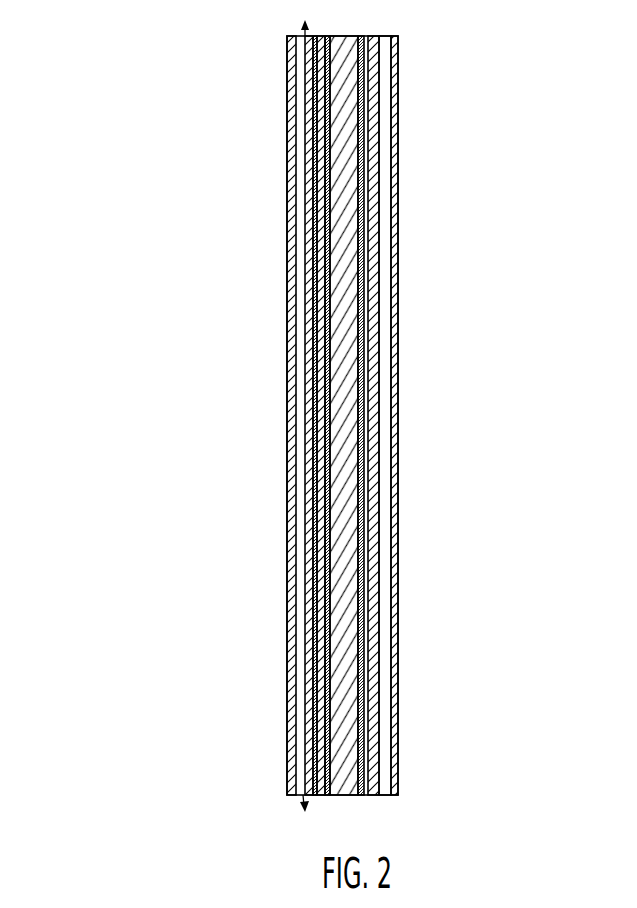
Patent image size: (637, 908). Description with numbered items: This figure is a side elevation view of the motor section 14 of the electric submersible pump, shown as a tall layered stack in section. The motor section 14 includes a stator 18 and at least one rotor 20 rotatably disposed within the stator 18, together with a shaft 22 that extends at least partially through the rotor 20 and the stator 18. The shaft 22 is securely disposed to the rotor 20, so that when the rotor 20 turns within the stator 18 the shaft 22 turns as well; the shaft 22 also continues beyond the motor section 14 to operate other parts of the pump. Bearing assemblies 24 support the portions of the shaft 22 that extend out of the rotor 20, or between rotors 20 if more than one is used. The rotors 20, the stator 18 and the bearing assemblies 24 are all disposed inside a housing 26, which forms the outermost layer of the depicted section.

The motor section 14 is at (124, 170).
The stator 18 is at (307, 352).
The rotor 20 is at (370, 137).
The shaft 22 is at (370, 73).
The bearing assemblies 24 is at (384, 206).
The housing 26 is at (288, 108).